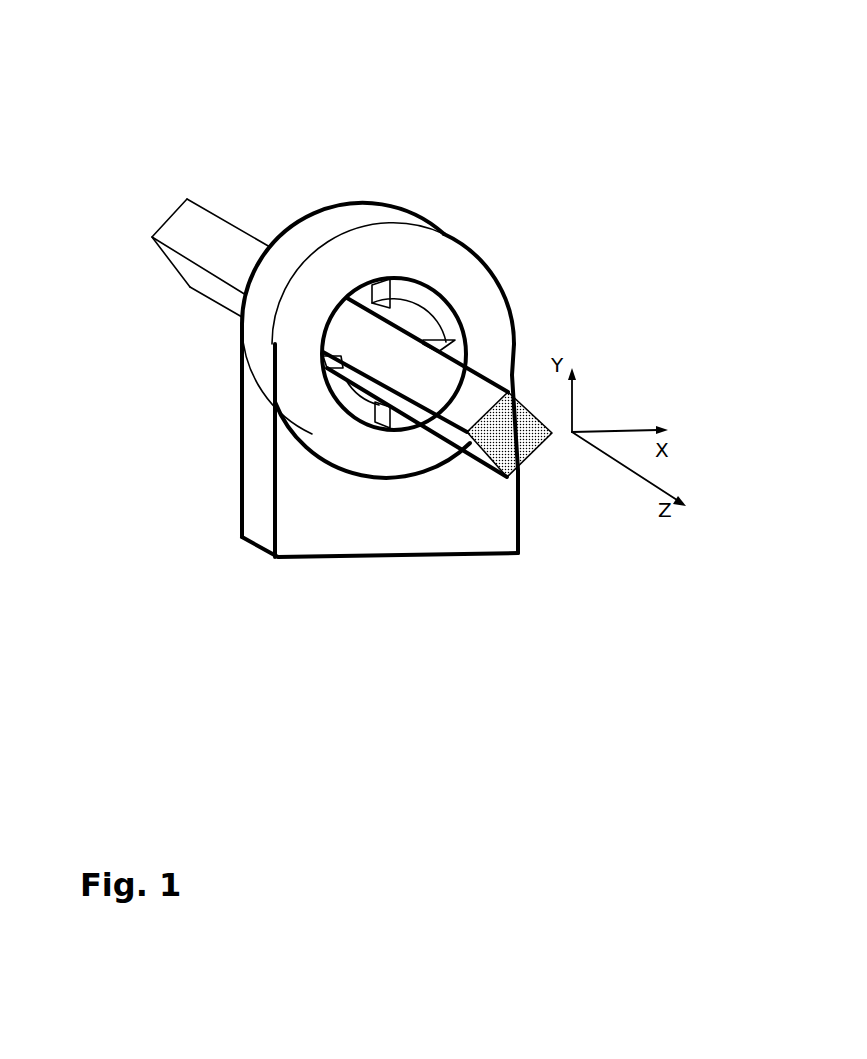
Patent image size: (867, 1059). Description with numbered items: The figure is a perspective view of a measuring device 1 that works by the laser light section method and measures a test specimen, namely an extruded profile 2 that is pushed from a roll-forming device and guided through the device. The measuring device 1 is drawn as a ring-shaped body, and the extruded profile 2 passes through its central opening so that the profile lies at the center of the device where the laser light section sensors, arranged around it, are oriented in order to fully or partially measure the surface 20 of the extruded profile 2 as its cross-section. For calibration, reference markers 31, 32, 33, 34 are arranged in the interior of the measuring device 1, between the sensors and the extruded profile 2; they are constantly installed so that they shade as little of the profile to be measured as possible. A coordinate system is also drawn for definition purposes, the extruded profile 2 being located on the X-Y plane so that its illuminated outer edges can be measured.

The measuring device 1 is at (407, 172).
The extruded profile 2 is at (193, 202).
The surface 20 is at (193, 220).
The reference marker 31 is at (380, 419).
The reference marker 32 is at (453, 340).
The reference marker 33 is at (385, 292).
The reference marker 34 is at (325, 360).